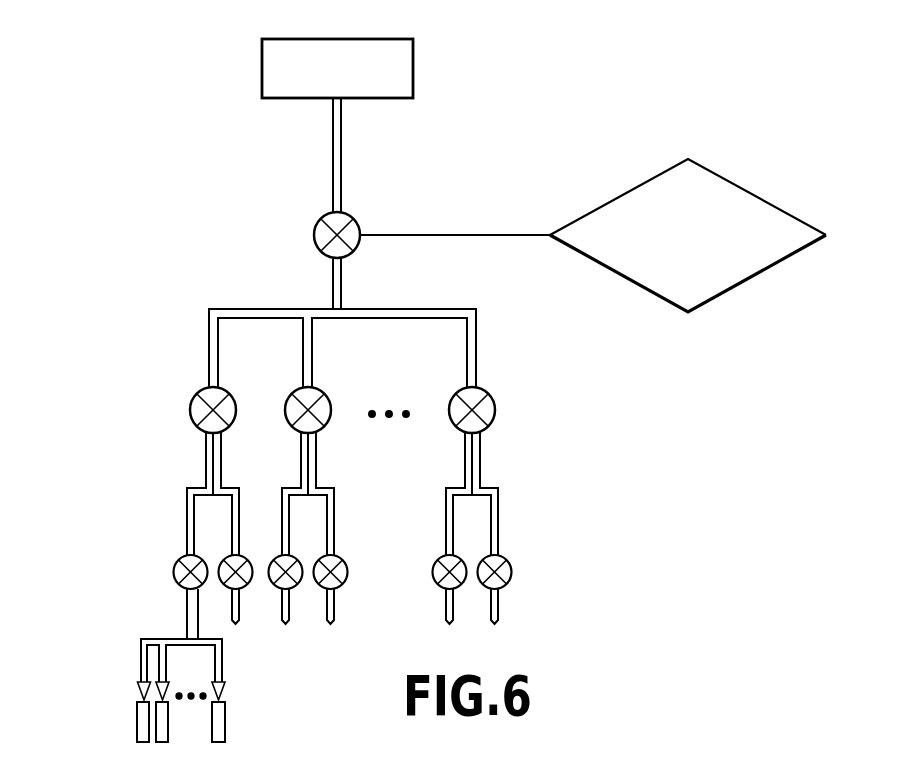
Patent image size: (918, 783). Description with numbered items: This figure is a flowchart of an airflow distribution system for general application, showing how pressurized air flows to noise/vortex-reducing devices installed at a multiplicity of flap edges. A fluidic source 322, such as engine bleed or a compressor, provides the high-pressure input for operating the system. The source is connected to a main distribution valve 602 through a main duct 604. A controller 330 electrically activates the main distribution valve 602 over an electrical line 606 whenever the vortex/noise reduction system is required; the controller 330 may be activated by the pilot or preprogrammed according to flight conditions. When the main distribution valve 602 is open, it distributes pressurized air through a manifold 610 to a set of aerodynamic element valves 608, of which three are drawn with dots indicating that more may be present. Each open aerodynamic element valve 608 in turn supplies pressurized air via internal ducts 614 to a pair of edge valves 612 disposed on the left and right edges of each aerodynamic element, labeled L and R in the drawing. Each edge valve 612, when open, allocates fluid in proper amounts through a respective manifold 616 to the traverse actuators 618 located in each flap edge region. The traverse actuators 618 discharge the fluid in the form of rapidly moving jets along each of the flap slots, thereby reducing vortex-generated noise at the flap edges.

The fluidic source 322 is at (413, 59).
The controller 330 is at (741, 184).
The main distribution valve 602 is at (318, 247).
The main duct 604 is at (333, 160).
The electrical line 606 is at (461, 235).
The aerodynamic element valves 608 is at (500, 409).
The manifold 610 is at (440, 307).
The edge valves 612 is at (548, 575).
The internal ducts 614 is at (508, 499).
The manifold 616 is at (134, 628).
The traverse actuators 618 is at (122, 720).